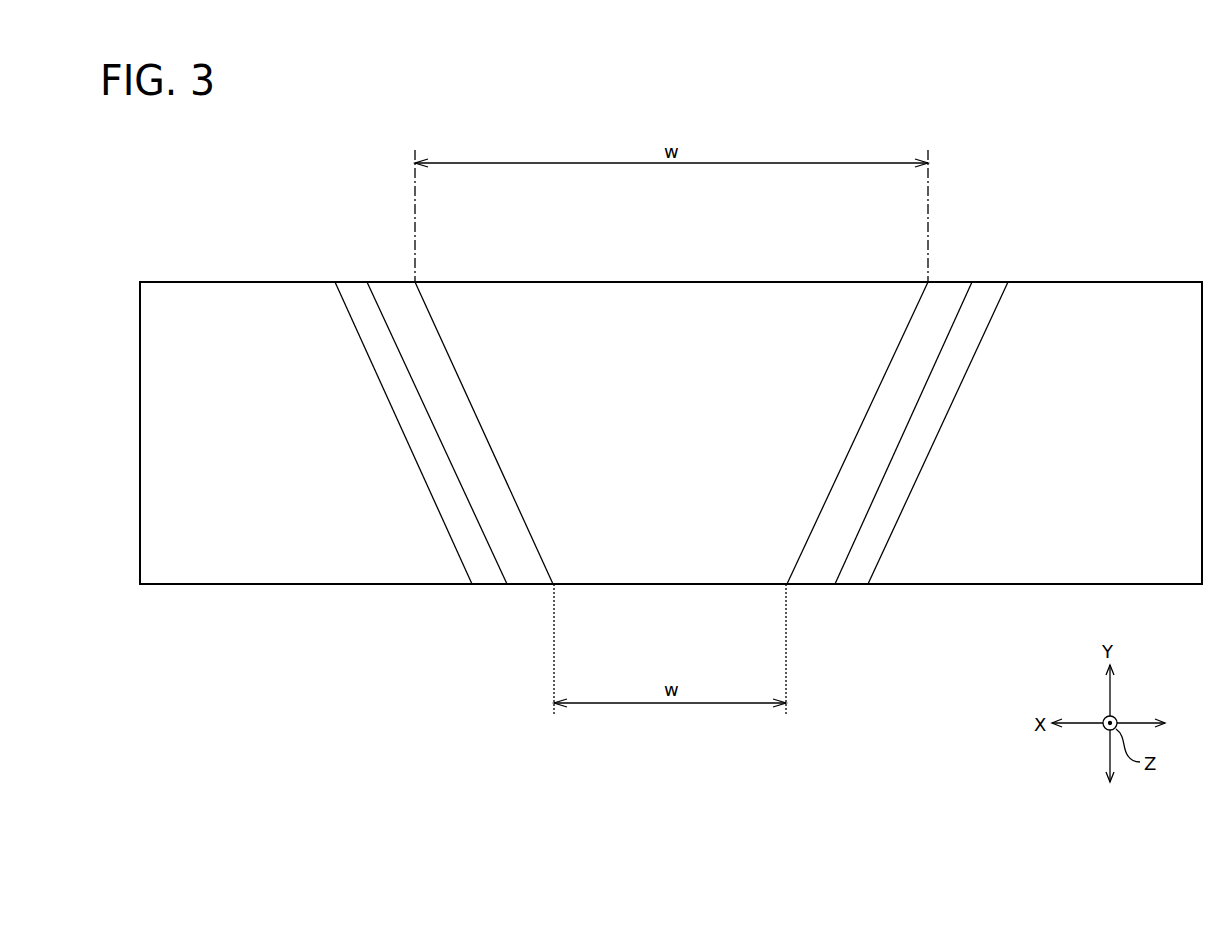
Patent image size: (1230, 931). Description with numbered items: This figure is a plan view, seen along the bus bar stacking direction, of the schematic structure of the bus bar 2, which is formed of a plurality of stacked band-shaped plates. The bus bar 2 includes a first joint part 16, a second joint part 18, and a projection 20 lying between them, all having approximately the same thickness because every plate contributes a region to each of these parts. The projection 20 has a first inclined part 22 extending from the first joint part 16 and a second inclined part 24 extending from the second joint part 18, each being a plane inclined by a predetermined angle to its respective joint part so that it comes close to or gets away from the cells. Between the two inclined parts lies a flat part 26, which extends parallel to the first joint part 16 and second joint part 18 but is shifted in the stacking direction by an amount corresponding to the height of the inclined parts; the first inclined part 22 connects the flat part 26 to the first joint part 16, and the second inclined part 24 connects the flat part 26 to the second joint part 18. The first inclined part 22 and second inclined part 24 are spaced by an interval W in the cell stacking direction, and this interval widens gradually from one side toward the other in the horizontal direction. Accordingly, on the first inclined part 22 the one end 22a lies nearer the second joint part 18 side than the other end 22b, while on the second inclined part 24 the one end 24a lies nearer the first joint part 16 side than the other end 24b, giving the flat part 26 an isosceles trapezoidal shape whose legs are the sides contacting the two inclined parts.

The bus bar 2 is at (684, 806).
The first joint part 16 is at (1137, 282).
The second joint part 18 is at (205, 282).
The projection 20 is at (787, 280).
The first inclined part 22 is at (960, 282).
The one end of first inclined part 22a is at (850, 586).
The other end of first inclined part 22b is at (990, 282).
The second inclined part 24 is at (380, 282).
The one end of second inclined part 24a is at (490, 586).
The other end of second inclined part 24b is at (352, 282).
The flat part 26 is at (658, 282).